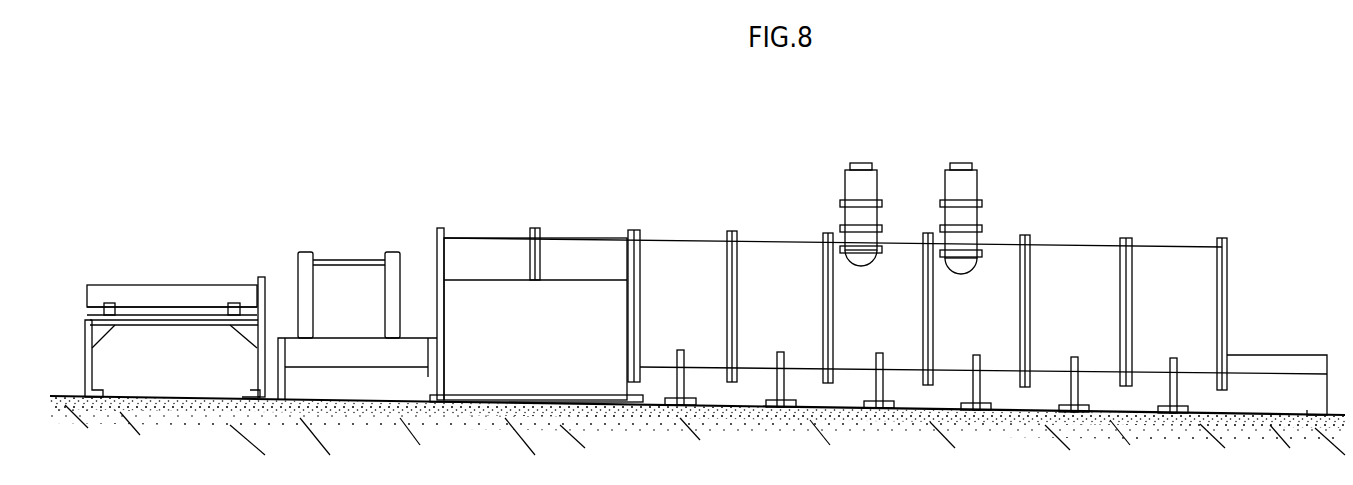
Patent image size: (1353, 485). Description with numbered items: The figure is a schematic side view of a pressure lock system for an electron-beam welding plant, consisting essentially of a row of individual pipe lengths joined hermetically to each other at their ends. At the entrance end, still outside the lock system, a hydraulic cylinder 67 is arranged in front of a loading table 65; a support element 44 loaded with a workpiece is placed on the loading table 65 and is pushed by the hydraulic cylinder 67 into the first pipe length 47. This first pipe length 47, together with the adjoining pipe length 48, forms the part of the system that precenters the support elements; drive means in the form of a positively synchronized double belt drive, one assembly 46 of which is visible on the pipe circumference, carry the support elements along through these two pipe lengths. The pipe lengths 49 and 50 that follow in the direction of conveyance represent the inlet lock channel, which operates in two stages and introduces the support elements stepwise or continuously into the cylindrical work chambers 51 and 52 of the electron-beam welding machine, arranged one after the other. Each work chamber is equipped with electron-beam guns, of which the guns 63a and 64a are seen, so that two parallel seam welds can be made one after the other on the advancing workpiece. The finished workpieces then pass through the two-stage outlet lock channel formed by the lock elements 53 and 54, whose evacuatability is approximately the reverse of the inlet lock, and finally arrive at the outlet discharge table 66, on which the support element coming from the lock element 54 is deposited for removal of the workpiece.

The support element 44 is at (293, 260).
The assembly of the double belt drive 46 is at (480, 292).
The first pipe length 47 is at (517, 250).
The pipe length 48 is at (598, 250).
The pipe length 49 is at (677, 253).
The pipe length 50 is at (770, 257).
The work chamber 51 is at (898, 250).
The work chamber 52 is at (997, 250).
The lock element 53 is at (1083, 260).
The lock element 54 is at (1172, 260).
The electron-beam gun 63a is at (862, 180).
The electron-beam gun 64a is at (968, 157).
The loading table 65 is at (378, 360).
The outlet discharge table 66 is at (1260, 363).
The hydraulic cylinder 67 is at (170, 293).